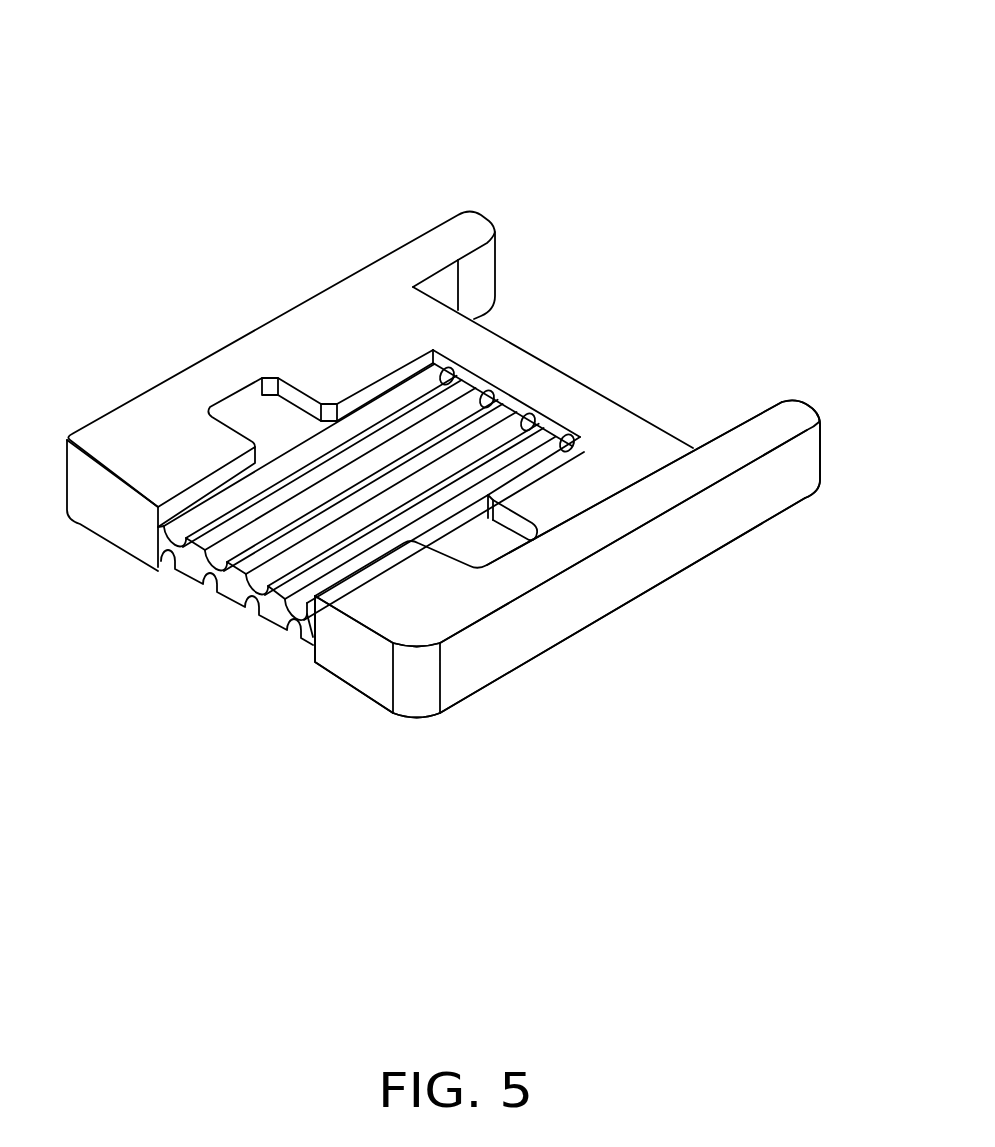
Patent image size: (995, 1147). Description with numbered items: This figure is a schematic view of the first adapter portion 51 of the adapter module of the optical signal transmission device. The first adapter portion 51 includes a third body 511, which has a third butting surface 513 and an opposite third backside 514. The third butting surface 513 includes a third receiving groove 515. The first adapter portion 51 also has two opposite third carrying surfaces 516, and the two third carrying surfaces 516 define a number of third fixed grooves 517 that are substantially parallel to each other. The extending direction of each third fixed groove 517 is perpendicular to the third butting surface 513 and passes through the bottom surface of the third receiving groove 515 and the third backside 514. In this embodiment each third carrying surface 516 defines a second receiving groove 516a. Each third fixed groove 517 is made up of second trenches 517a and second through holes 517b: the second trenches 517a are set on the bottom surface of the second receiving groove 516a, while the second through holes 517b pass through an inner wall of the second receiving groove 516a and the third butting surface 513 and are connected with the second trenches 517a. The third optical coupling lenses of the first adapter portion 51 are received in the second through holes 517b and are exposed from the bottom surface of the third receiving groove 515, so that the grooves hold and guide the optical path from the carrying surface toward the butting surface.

The first adapter portion 51 is at (447, 112).
The third body 511 is at (685, 535).
The third butting surface 513 is at (809, 400).
The third backside 514 is at (368, 660).
The third receiving groove 515 is at (637, 410).
The third carrying surface 516 is at (173, 420).
The second receiving groove 516a is at (278, 418).
The third fixed groove 517 is at (175, 665).
The second trench 517a is at (217, 557).
The second through hole 517b is at (490, 400).